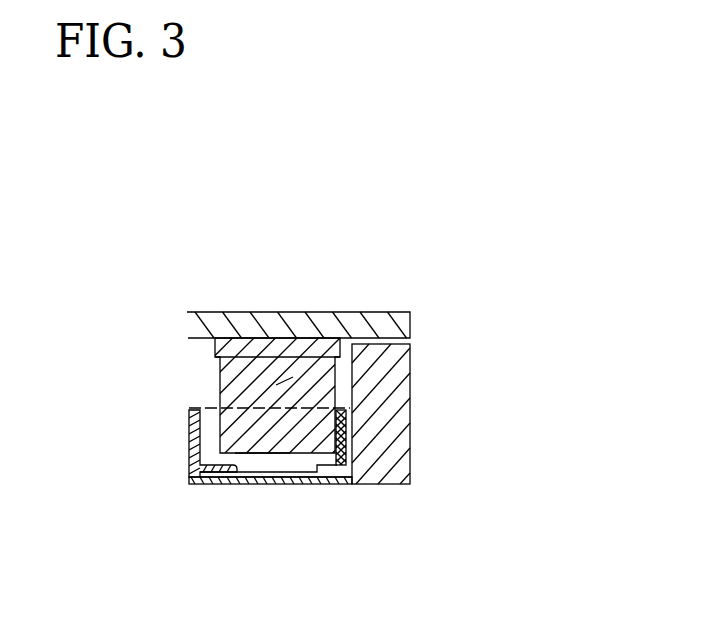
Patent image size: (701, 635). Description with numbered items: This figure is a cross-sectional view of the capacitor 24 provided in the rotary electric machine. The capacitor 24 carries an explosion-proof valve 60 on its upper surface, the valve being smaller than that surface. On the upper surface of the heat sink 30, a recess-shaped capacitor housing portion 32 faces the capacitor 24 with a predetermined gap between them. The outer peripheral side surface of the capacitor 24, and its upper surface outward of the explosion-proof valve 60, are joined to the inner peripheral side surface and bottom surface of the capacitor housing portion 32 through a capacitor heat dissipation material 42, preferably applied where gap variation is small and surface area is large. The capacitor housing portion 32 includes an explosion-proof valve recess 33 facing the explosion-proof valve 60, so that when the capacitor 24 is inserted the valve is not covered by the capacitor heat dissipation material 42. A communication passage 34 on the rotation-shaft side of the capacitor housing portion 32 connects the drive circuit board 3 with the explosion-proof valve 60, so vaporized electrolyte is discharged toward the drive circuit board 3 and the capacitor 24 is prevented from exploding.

The drive circuit board 3 is at (378, 313).
The capacitor 24 is at (333, 316).
The heat sink 30 is at (380, 464).
The capacitor housing portion 32 is at (316, 474).
The explosion-proof valve recess 33 is at (265, 477).
The communication passage 34 is at (205, 411).
The capacitor heat dissipation material 42 is at (350, 443).
The explosion-proof valve 60 is at (260, 455).